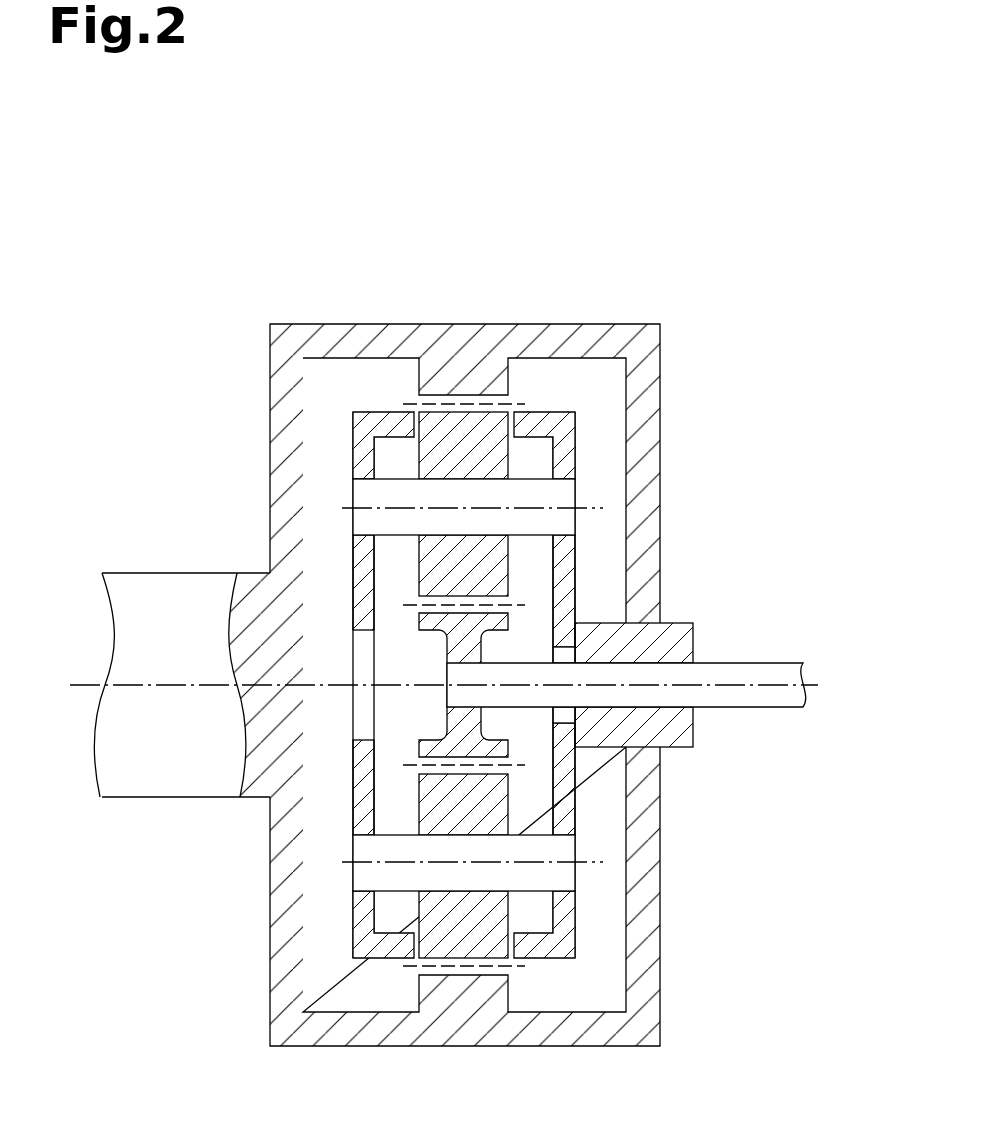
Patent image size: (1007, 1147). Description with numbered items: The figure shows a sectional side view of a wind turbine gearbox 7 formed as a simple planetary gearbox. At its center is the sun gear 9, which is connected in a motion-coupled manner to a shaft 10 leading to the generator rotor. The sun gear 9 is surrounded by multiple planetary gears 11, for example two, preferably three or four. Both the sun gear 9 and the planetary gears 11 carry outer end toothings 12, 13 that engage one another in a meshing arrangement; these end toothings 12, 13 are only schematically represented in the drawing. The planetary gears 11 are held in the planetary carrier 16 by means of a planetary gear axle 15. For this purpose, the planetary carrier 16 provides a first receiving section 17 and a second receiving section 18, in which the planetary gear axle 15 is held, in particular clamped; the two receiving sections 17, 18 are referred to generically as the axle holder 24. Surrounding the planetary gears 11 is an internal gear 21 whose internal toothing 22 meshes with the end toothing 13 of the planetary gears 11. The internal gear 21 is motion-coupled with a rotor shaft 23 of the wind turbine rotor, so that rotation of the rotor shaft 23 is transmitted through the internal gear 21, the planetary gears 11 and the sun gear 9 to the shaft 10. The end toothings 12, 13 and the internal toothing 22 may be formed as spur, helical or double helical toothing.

The wind turbine gearbox 7 is at (686, 207).
The sun gear 9 is at (513, 750).
The shaft 10 is at (765, 648).
The planetary gears 11 is at (460, 433).
The end toothing 12 is at (517, 608).
The end toothing 13 is at (515, 597).
The planetary gear axle 15 is at (585, 492).
The planetary carrier 16 is at (582, 423).
The first receiving section 17 is at (565, 563).
The second receiving section 18 is at (370, 575).
The internal gear 21 is at (370, 317).
The internal toothing 22 is at (518, 977).
The rotor shaft 23 is at (180, 557).
The axle holder 24 is at (342, 468).